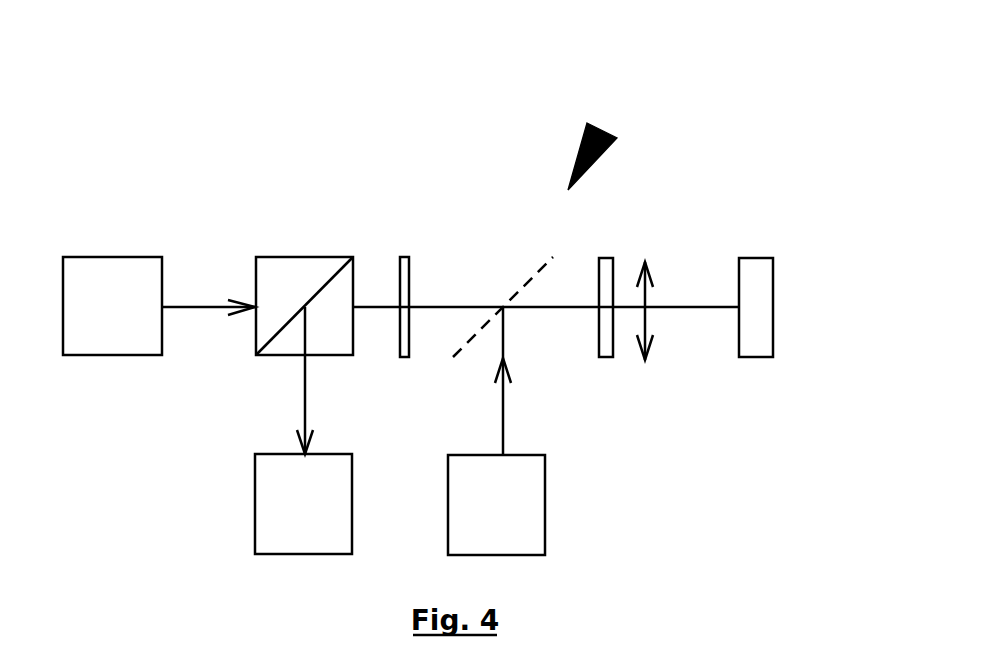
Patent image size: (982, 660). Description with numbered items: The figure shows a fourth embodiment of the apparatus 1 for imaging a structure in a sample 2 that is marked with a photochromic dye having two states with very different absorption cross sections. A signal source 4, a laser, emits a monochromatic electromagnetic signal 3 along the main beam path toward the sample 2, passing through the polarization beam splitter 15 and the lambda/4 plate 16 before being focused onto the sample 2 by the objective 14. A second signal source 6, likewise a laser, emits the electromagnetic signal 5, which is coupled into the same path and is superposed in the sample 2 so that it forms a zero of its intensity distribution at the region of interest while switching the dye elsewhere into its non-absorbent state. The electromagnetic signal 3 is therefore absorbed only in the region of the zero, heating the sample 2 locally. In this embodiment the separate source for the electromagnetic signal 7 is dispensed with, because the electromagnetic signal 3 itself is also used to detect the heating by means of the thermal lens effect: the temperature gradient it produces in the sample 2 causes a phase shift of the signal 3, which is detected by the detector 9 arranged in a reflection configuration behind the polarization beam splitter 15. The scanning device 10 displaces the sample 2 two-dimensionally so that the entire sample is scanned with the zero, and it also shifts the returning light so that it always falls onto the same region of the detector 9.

The apparatus 1 is at (602, 130).
The sample 2 is at (773, 278).
The electromagnetic signal 3 is at (267, 326).
The signal source 4 is at (130, 257).
The electromagnetic signal 5 is at (505, 407).
The signal source 6 is at (545, 507).
The electromagnetic signal 7 is at (210, 310).
The detector 9 is at (257, 525).
The scanning device 10 is at (607, 357).
The objective 14 is at (655, 240).
The polarization beam splitter 15 is at (307, 257).
The lambda/4 plate 16 is at (403, 257).